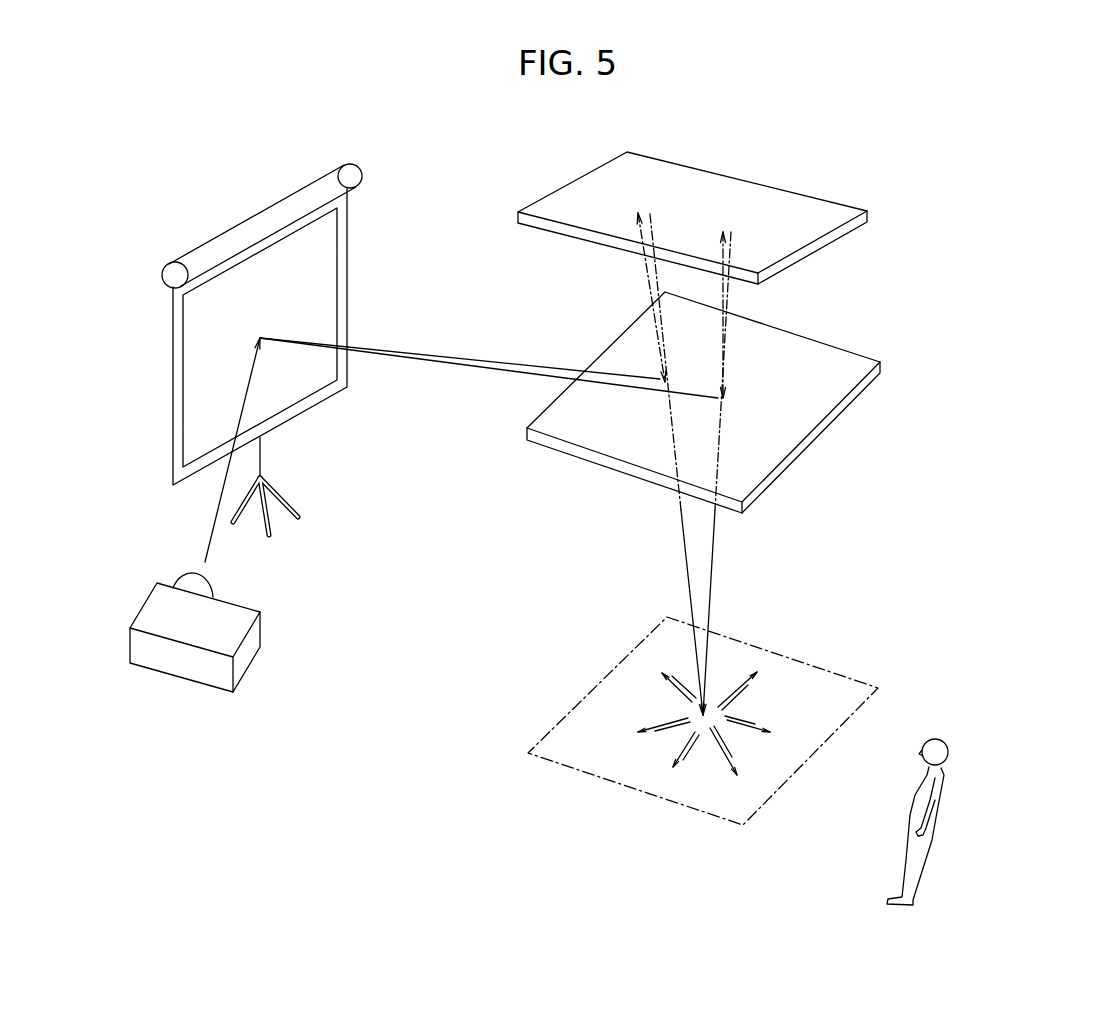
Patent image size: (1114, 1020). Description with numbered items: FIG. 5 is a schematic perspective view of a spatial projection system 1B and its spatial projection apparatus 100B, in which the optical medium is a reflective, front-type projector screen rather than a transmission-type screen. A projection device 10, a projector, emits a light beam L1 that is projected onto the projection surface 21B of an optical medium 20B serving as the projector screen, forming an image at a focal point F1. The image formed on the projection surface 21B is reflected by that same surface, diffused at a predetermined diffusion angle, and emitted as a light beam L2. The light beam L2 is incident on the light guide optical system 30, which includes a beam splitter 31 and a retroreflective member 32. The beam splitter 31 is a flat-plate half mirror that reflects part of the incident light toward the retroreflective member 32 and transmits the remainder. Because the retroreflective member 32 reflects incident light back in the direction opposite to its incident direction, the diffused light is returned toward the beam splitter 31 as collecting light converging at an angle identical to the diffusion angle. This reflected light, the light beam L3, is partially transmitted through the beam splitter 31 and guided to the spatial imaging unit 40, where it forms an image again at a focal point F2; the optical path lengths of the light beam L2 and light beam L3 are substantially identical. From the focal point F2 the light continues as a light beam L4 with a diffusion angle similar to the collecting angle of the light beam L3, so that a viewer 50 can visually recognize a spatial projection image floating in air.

The spatial projection apparatus 100B is at (437, 190).
The spatial projection system 1B is at (503, 190).
The projection device 10 is at (163, 613).
The optical medium 20B is at (272, 238).
The projection surface 21B is at (240, 303).
The light guide optical system 30 is at (751, 327).
The beam splitter 31 is at (813, 447).
The retroreflective member 32 is at (802, 193).
The spatial imaging unit 40 is at (597, 690).
The viewer 50 is at (965, 777).
The focal point F1 is at (255, 341).
The focal point F2 is at (703, 720).
The light beam L1 is at (207, 530).
The light beam L2 is at (475, 358).
The light beam L3 is at (685, 553).
The light beam L4 is at (767, 690).